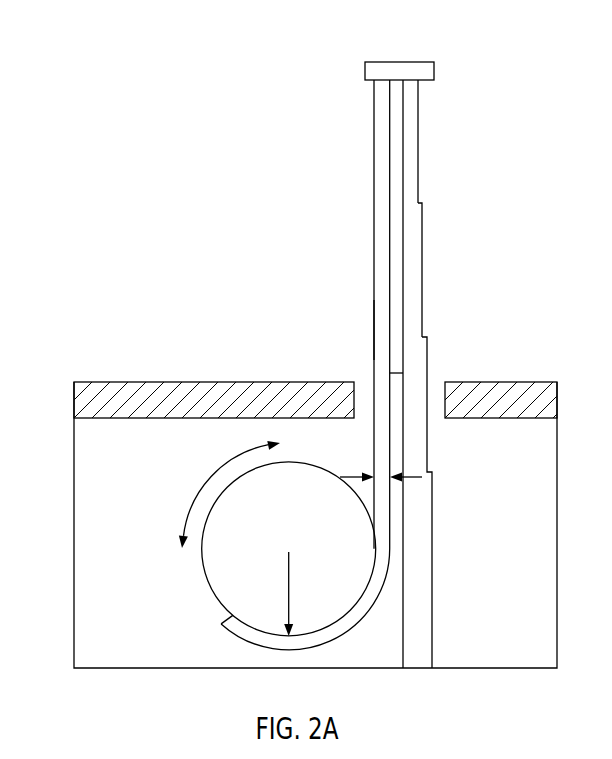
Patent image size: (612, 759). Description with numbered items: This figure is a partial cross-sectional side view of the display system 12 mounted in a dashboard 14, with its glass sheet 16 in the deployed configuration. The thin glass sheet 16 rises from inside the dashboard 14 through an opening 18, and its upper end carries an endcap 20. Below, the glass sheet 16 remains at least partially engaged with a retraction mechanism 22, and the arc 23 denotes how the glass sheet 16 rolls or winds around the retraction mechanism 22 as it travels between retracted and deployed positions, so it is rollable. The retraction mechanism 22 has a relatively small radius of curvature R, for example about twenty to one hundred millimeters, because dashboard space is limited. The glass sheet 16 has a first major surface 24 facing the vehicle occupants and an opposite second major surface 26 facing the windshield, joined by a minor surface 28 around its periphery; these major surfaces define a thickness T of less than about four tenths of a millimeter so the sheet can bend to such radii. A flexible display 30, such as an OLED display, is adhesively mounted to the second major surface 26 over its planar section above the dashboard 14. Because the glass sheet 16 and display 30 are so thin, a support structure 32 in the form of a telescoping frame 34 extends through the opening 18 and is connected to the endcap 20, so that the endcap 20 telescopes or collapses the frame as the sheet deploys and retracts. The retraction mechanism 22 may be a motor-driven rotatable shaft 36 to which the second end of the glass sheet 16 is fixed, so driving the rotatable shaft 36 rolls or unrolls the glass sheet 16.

The display system 12 is at (288, 81).
The dashboard 14 is at (175, 380).
The glass sheet 16 is at (383, 193).
The opening 18 is at (356, 373).
The endcap 20 is at (415, 70).
The retraction mechanism 22 is at (183, 581).
The arc 23 is at (192, 497).
The first major surface 24 is at (375, 330).
The second major surface 26 is at (392, 370).
The minor surface 28 is at (222, 620).
The display 30 is at (397, 145).
The support structure 32 is at (450, 329).
The telescoping frame 34 is at (412, 278).
The rotatable shaft 36 is at (338, 567).
The thickness T is at (413, 475).
The radius of curvature R is at (288, 576).